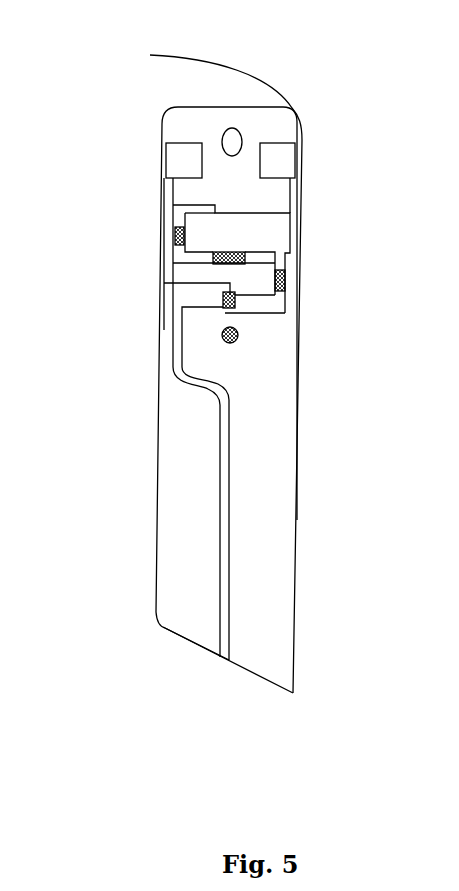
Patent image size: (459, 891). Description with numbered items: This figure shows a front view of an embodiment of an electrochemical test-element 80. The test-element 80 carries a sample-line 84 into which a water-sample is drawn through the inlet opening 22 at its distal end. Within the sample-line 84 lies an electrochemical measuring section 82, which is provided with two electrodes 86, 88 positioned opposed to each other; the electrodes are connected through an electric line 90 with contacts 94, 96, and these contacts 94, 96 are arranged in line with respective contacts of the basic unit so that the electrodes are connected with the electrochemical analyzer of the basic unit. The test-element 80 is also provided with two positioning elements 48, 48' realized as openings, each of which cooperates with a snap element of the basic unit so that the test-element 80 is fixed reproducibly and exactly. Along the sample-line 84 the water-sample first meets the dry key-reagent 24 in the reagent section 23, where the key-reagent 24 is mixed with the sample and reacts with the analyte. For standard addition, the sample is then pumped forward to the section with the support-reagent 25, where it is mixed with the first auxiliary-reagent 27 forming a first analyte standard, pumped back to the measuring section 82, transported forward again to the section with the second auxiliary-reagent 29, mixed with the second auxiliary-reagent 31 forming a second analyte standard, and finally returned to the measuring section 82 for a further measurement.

The inlet opening 22 is at (220, 662).
The reagent section 23 is at (291, 298).
The key-reagent 24 is at (287, 277).
The support-reagent 25 is at (242, 244).
The first auxiliary-reagent 27 is at (250, 251).
The section with the second auxiliary-reagent 29 is at (193, 214).
The second auxiliary-reagent 31 is at (185, 232).
The positioning element 48 is at (133, 118).
The positioning element 48' is at (318, 350).
The test-element 80 is at (129, 507).
The electrochemical measuring section 82 is at (216, 296).
The sample-line 84 is at (218, 575).
The electrode 86 is at (164, 283).
The electrode 88 is at (224, 305).
The electric line 90 is at (162, 252).
The contact 94 is at (150, 55).
The contact 96 is at (180, 155).